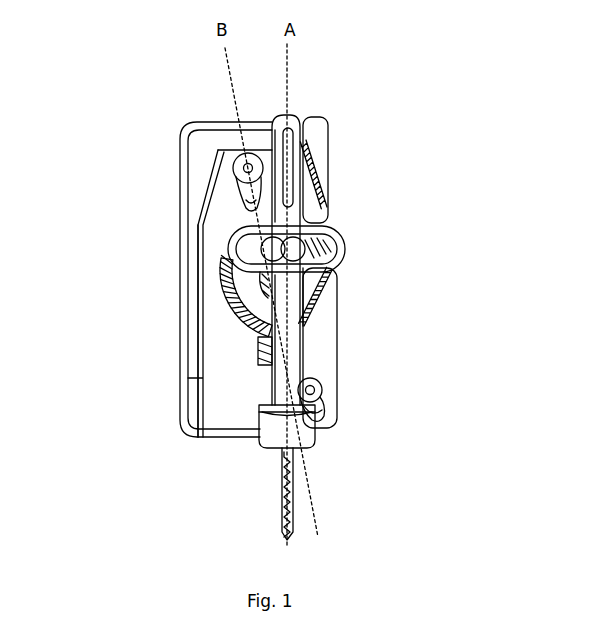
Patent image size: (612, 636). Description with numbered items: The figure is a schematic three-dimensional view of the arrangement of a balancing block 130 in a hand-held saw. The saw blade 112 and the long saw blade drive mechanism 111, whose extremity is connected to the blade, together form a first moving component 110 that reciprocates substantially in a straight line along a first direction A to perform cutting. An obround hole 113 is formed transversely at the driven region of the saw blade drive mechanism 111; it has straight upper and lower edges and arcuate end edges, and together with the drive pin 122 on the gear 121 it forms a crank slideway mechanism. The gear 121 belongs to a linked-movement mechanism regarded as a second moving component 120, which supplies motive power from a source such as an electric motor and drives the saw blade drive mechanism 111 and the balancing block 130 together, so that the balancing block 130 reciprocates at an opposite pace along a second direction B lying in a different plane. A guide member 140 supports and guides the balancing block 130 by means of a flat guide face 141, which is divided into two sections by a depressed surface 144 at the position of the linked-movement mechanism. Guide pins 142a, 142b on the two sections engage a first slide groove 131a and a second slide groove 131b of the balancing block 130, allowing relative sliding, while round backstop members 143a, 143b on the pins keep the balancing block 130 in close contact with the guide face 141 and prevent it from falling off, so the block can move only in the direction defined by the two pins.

The first moving component 110 is at (302, 347).
The saw blade drive mechanism 111 is at (287, 365).
The saw blade 112 is at (290, 488).
The obround hole 113 is at (318, 243).
The second moving component 120 is at (325, 288).
The gear 121 is at (312, 303).
The drive pin 122 is at (320, 223).
The balancing block 130 is at (215, 347).
The first slide groove 131a is at (250, 198).
The second slide groove 131b is at (318, 412).
The guide member 140 is at (178, 158).
The guide face 141 is at (330, 138).
The first guide pin 142a is at (234, 156).
The second guide pin 142b is at (320, 393).
The first backstop member 143a is at (250, 165).
The second backstop member 143b is at (314, 391).
The depressed surface 144 is at (200, 277).